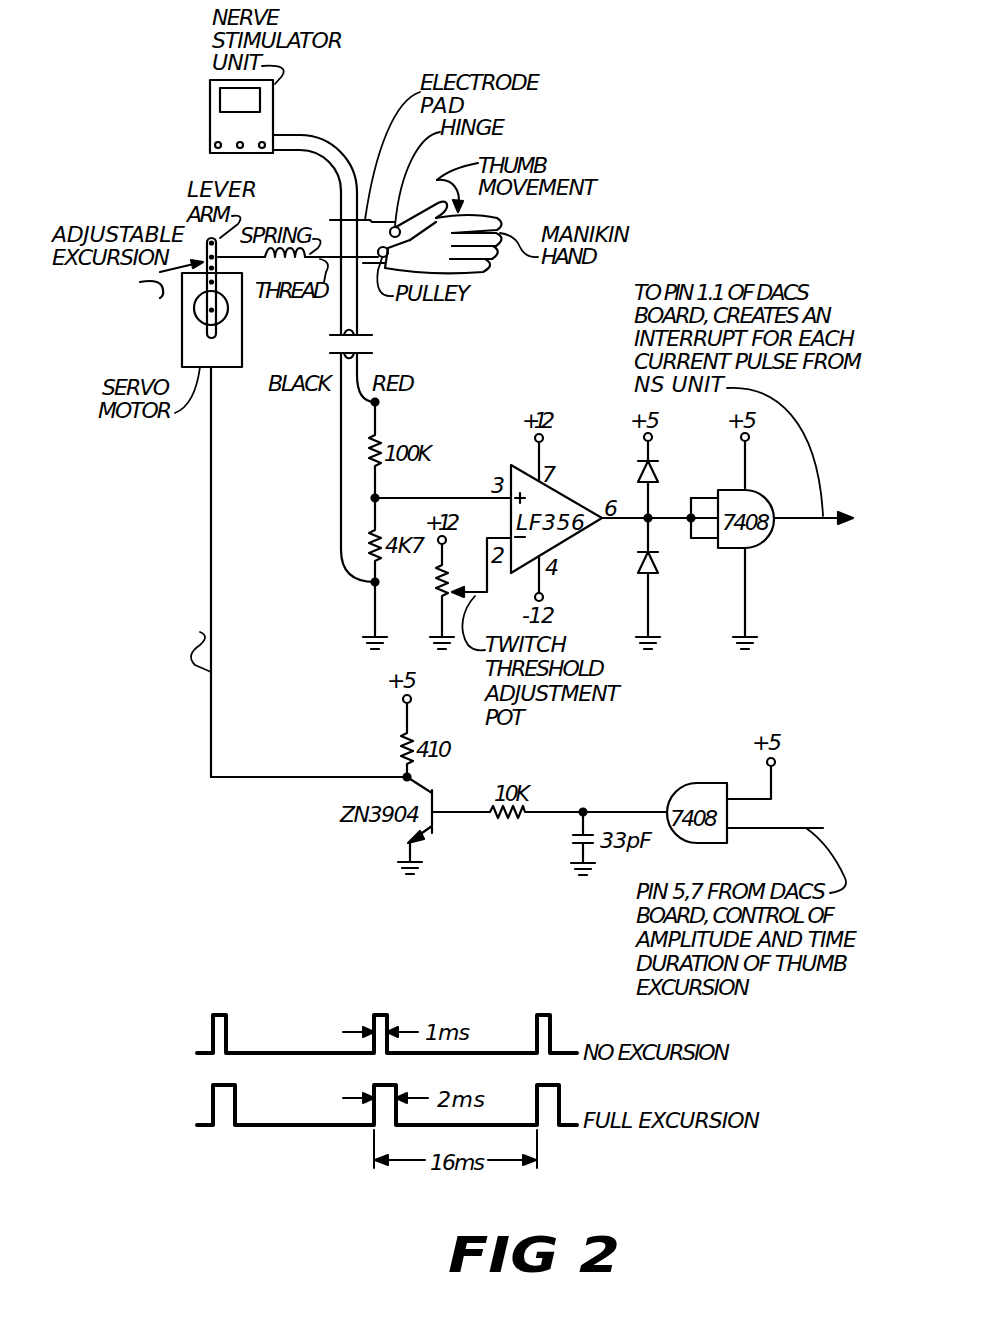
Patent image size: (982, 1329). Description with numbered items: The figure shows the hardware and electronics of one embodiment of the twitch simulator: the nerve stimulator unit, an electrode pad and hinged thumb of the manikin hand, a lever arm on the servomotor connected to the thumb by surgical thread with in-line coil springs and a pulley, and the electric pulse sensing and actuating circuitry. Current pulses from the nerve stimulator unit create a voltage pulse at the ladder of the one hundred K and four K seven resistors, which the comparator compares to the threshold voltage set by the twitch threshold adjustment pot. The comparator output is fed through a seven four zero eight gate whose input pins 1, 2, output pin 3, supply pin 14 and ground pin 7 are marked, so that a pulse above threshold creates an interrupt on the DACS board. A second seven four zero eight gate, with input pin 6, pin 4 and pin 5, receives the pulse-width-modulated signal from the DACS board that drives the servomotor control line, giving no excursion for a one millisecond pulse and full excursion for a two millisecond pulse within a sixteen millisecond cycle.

The 7408 AND gate input pin 1 is at (704, 489).
The 7408 AND gate input pin 2 is at (704, 533).
The 7408 AND gate output pin 3 is at (813, 509).
The 7408 AND gate pin 4 is at (751, 779).
The 7408 AND gate pin 5 is at (775, 840).
The 7408 AND gate input pin 6 is at (625, 799).
The 7408 ground pin 7 is at (747, 598).
The 7408 supply pin 14 is at (755, 461).